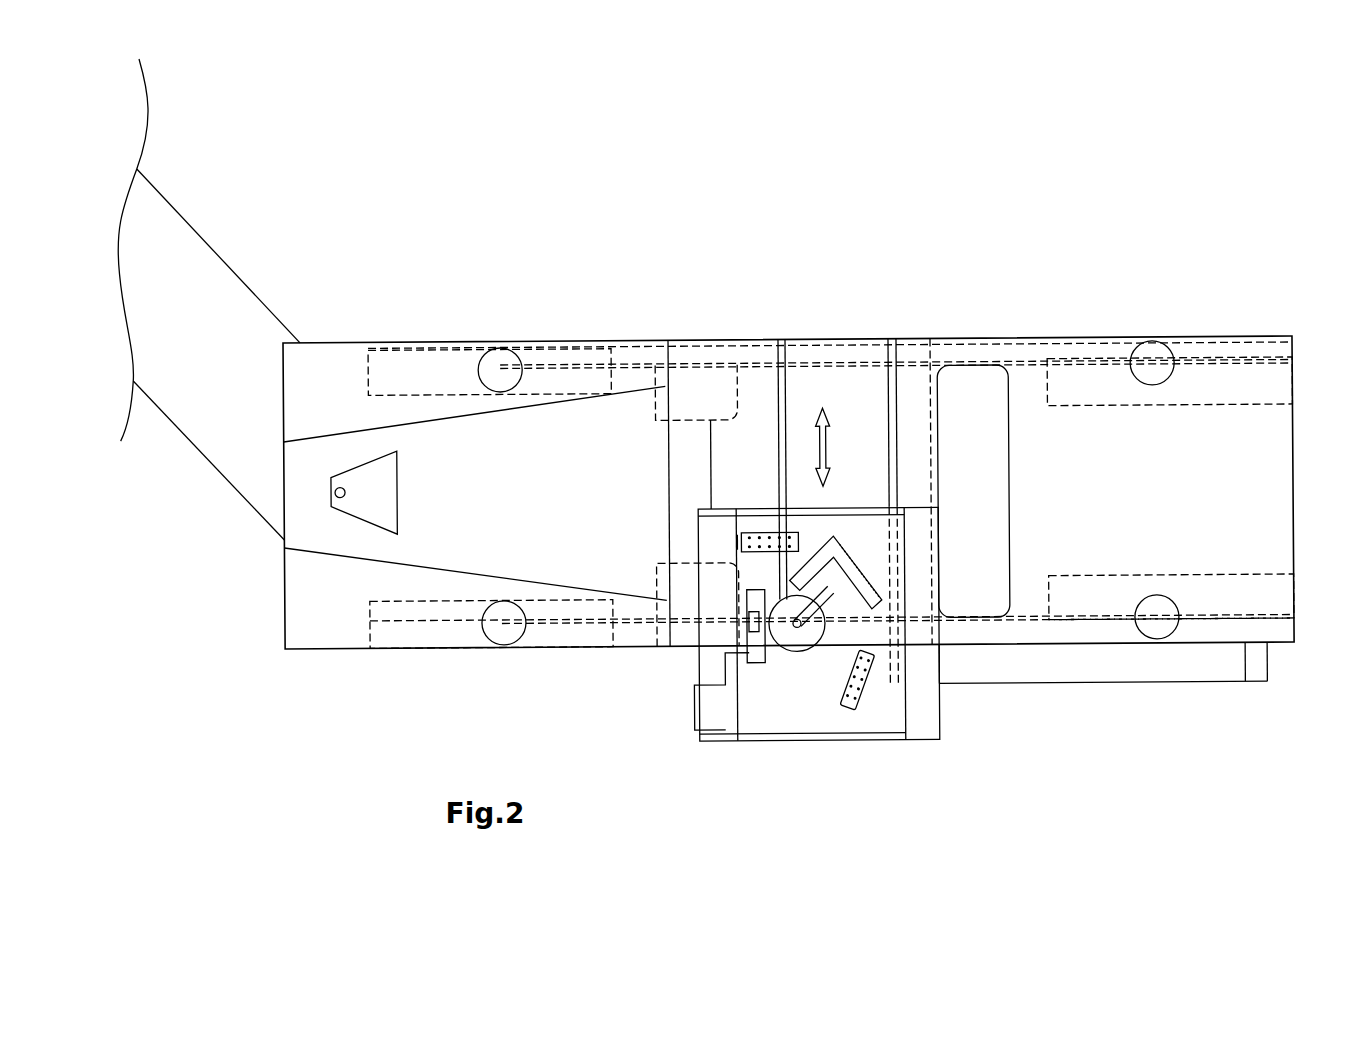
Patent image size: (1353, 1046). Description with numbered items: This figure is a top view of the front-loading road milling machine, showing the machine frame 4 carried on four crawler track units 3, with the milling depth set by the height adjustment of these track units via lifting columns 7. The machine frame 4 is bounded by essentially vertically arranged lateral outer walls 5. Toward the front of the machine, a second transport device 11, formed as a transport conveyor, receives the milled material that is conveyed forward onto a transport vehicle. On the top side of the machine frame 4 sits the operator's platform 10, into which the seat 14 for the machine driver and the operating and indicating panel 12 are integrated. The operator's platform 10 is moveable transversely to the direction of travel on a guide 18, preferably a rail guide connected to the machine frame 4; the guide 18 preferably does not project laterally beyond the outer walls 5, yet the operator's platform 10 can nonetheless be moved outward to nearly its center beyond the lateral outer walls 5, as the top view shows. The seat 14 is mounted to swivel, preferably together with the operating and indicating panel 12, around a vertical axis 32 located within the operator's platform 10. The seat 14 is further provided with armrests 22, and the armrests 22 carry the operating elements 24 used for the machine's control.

The crawler track units 3 is at (437, 372).
The machine frame 4 is at (328, 384).
The lateral outer walls 5 is at (648, 343).
The lifting columns 7 is at (500, 372).
The operator's platform 10 is at (875, 700).
The second transport device 11 is at (238, 388).
The operating and indicating panel 12 is at (718, 690).
The seat 14 is at (830, 597).
The guide 18 is at (893, 402).
The armrests 22 is at (757, 531).
The operating elements 24 is at (782, 531).
The vertical axis 32 is at (796, 624).